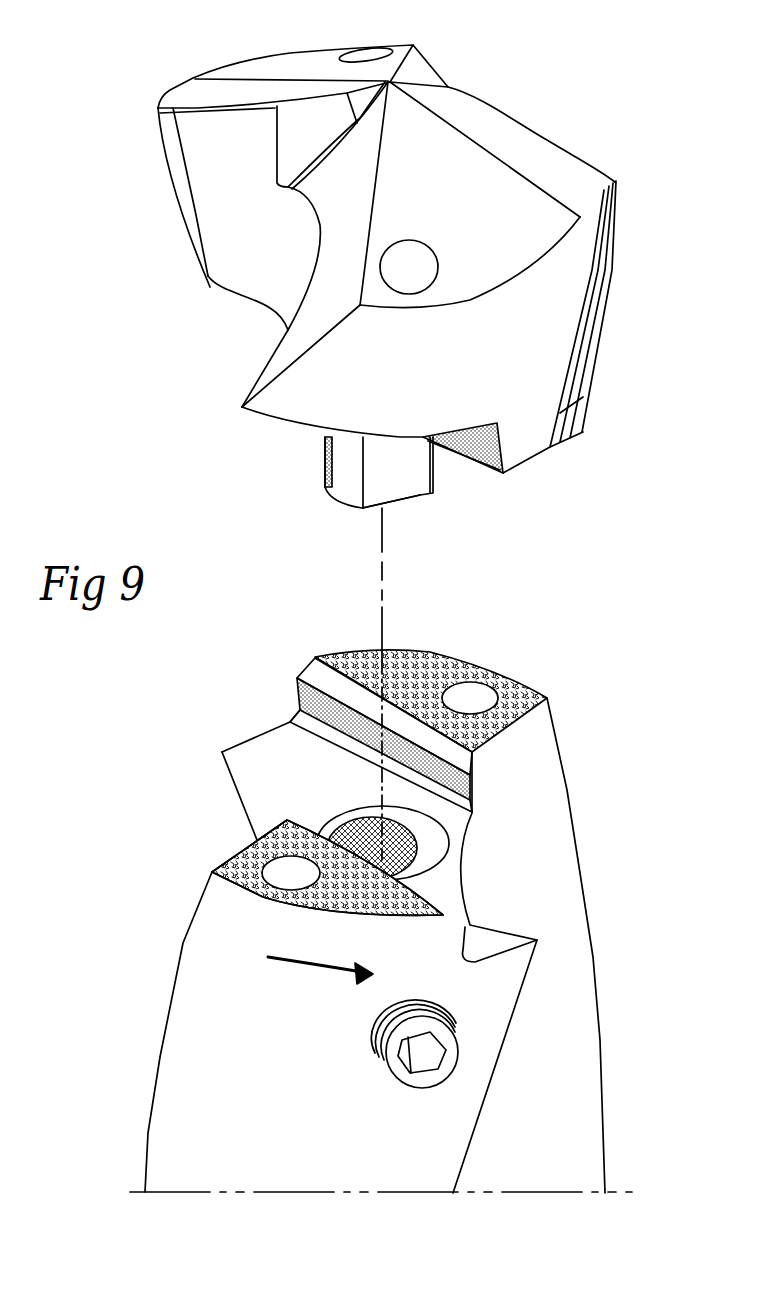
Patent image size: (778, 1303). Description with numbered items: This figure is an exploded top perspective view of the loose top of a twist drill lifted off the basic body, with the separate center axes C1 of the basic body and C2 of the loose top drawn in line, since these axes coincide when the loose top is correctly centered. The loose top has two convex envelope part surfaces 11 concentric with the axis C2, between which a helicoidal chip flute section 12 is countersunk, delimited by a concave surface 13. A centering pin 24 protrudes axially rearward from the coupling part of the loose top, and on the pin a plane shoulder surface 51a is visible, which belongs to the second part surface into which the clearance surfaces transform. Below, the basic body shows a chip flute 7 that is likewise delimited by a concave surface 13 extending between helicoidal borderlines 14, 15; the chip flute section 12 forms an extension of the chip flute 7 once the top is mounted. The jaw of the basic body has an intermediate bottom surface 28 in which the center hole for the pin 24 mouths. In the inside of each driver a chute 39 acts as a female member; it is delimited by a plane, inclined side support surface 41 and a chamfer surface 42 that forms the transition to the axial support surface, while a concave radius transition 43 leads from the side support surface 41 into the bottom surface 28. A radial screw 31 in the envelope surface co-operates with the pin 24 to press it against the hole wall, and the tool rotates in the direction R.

The chip flute 7 is at (587, 1120).
The convex envelope part surface 11 is at (521, 376).
The chip flute section 12 is at (242, 316).
The concave surface 13 is at (263, 237).
The helicoidal borderline 14 is at (475, 1132).
The helicoidal borderline 15 is at (595, 973).
The centering pin 24 is at (333, 500).
The bottom surface 28 is at (311, 772).
The screw 31 is at (428, 1075).
The chute 39 is at (302, 718).
The side support surface 41 is at (467, 800).
The chamfer surface 42 is at (457, 762).
The concave radius transition 43 is at (358, 760).
The plane shoulder surface 51a is at (397, 485).
The center axis of the basic body C1 is at (382, 625).
The center axis of the loose top C2 is at (382, 543).
The direction of rotation R is at (320, 961).